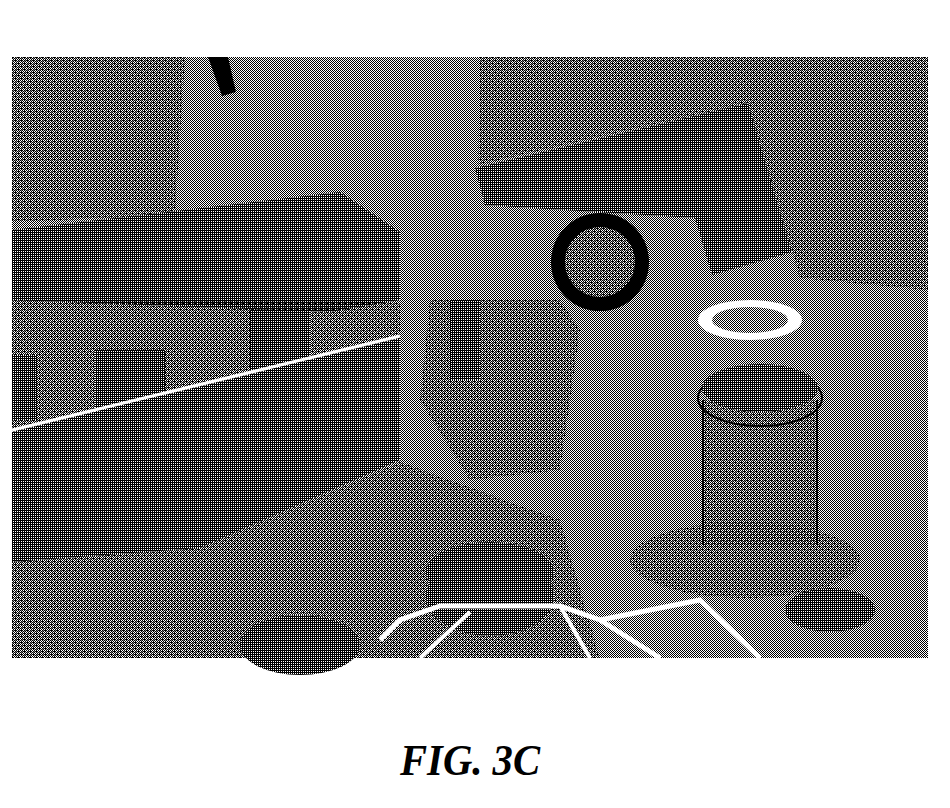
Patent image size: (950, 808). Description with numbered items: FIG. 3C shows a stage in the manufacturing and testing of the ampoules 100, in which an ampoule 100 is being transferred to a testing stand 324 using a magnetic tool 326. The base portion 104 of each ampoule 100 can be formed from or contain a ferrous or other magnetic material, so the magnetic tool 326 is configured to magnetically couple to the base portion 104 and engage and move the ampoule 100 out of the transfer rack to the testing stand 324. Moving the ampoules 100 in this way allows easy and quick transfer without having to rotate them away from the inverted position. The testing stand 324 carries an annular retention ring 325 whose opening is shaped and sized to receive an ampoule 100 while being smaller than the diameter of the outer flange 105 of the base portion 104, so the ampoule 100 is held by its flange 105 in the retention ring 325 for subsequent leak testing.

The ampoule 100 is at (698, 461).
The base portion 104 is at (710, 370).
The outer flange 105 is at (835, 395).
The testing stand 324 is at (715, 540).
The retention ring 325 is at (835, 420).
The magnetic tool 326 is at (625, 147).